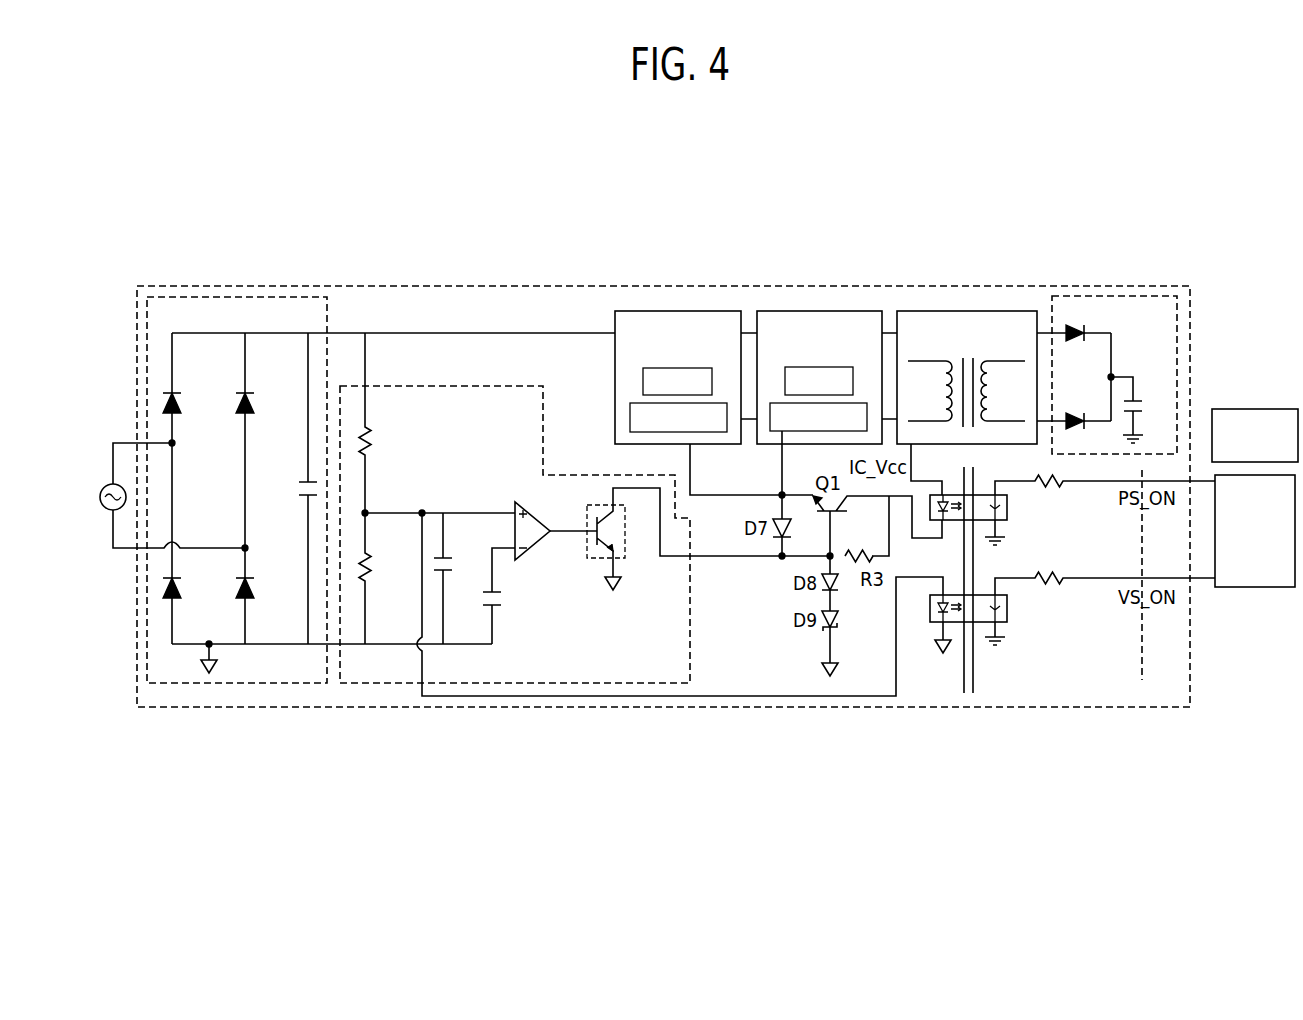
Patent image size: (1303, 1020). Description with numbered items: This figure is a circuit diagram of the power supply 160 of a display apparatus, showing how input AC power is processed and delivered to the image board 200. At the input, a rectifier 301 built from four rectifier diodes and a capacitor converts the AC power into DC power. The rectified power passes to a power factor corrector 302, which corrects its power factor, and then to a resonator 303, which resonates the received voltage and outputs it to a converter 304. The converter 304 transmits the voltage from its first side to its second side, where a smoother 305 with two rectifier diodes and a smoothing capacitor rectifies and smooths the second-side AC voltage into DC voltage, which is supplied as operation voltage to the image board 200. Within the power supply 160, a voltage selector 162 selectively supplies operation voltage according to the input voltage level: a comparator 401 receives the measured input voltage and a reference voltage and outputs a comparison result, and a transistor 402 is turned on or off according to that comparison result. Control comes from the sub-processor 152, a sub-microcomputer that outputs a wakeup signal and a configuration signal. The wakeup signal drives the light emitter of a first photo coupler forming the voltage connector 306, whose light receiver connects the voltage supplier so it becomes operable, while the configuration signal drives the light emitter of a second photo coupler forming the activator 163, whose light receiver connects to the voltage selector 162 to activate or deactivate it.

The power supply 160 is at (537, 286).
The rectifier 301 is at (243, 297).
The voltage selector 162 is at (440, 386).
The power factor corrector 302 is at (674, 311).
The resonator 303 is at (816, 311).
The converter 304 is at (963, 311).
The smoother 305 is at (1117, 296).
The image board 200 is at (1255, 409).
The voltage connector 306 is at (1008, 519).
The activator 163 is at (1008, 620).
The sub-processor 152 is at (1262, 587).
The comparator 401 is at (530, 548).
The transistor 402 is at (592, 558).